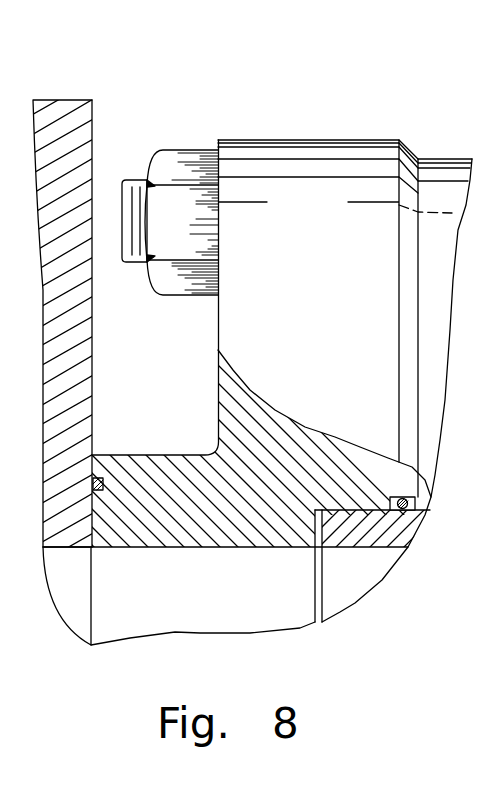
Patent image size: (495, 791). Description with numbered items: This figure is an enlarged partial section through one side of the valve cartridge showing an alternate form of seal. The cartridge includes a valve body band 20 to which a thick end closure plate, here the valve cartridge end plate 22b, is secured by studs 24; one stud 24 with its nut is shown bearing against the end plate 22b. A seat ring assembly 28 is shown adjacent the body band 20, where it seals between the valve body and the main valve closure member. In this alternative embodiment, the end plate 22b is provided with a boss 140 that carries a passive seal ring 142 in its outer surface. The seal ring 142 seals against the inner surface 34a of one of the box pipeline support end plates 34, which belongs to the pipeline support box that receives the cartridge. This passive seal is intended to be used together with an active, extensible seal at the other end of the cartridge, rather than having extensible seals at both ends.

The valve body band 20 is at (437, 170).
The valve cartridge end plate 22b is at (260, 155).
The stud 24 is at (170, 163).
The seat ring assembly 28 is at (343, 537).
The box pipeline support end plate 34 is at (72, 108).
The inner surface 34a is at (93, 127).
The boss 140 is at (142, 465).
The passive seal ring 142 is at (97, 477).